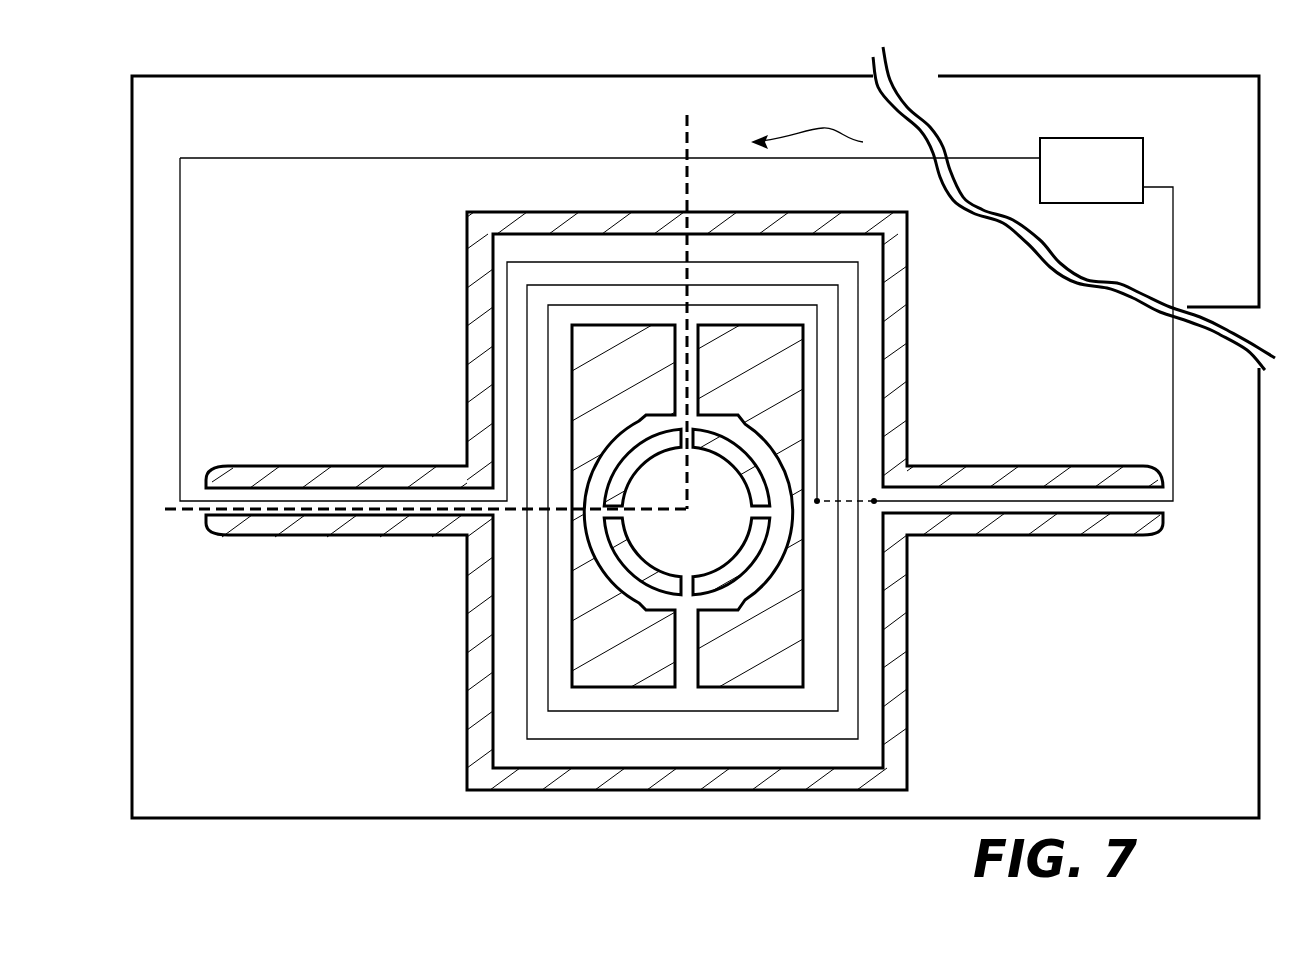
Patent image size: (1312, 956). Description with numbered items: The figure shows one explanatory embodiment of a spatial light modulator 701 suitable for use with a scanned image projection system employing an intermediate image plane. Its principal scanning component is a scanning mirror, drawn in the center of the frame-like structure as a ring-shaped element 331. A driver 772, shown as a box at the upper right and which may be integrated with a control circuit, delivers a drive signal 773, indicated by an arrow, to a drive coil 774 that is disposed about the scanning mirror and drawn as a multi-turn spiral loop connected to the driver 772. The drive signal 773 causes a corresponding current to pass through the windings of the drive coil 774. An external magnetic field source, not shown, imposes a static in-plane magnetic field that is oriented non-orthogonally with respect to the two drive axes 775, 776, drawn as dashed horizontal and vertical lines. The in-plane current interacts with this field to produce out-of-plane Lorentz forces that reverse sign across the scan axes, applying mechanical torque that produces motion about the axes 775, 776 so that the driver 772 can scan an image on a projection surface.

The spatial light modulator 701 is at (427, 75).
The driver 772 is at (1087, 170).
The drive signal 773 is at (823, 130).
The drive coil 774 is at (525, 370).
The drive axis 775 is at (173, 511).
The drive axis 776 is at (683, 140).
The ring electrode 331 is at (712, 542).